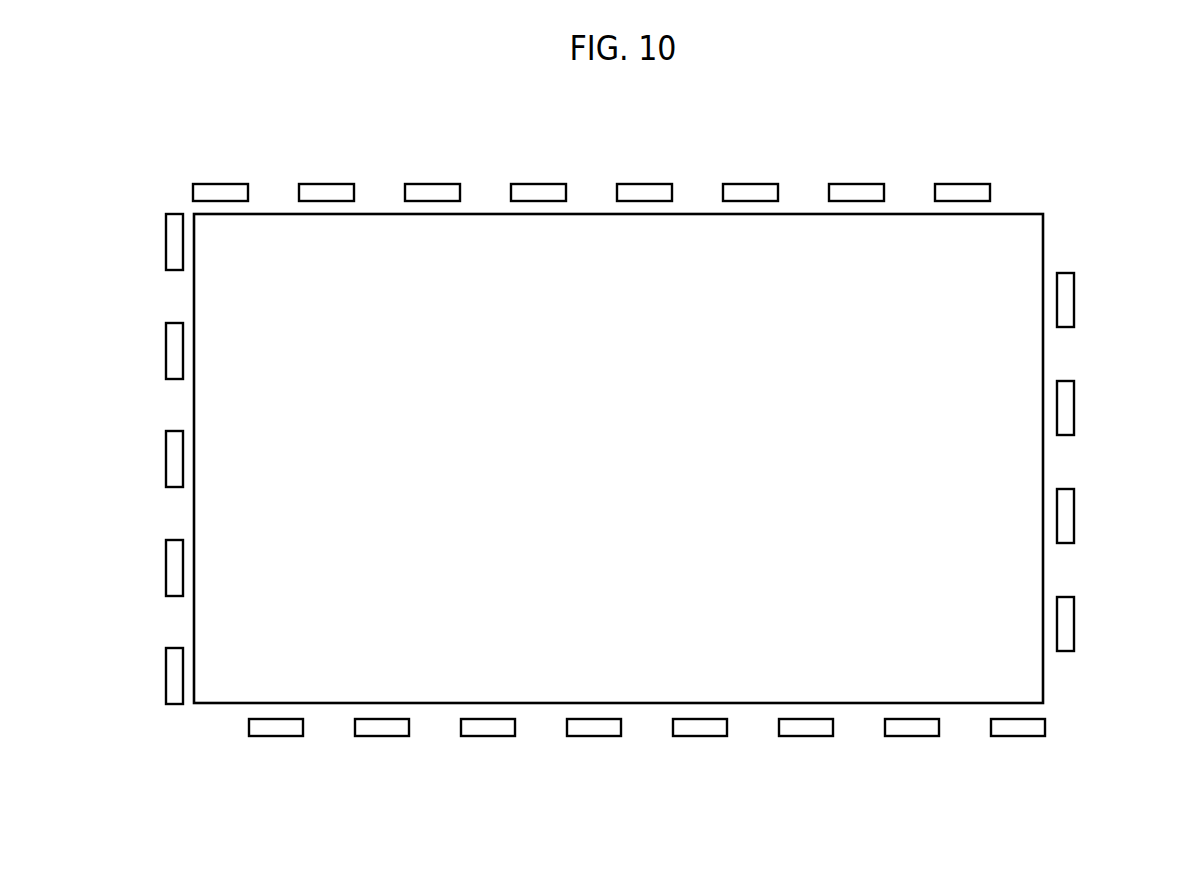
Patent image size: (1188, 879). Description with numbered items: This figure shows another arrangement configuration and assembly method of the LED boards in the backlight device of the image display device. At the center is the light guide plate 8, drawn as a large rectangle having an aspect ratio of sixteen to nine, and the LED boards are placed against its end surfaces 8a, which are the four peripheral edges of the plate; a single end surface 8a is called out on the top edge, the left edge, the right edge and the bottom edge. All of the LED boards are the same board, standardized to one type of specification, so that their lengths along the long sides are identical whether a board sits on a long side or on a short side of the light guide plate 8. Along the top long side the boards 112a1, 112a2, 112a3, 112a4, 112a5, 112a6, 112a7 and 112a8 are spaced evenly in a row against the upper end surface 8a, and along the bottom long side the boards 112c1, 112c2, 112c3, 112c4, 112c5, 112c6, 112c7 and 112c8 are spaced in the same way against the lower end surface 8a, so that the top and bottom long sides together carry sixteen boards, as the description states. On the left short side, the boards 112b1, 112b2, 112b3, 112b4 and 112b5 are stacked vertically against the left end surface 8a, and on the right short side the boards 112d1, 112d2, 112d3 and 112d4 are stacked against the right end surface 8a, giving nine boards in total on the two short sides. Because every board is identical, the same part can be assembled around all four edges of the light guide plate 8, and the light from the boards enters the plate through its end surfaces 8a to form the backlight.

The light guide plate 8 is at (1040, 208).
The end surfaces 8a is at (698, 213).
The upper side sensor electrode 112a1 is at (221, 190).
The upper side sensor electrode 112a2 is at (327, 190).
The upper side sensor electrode 112a3 is at (433, 190).
The upper side sensor electrode 112a4 is at (539, 190).
The upper side sensor electrode 112a5 is at (645, 190).
The upper side sensor electrode 112a6 is at (751, 190).
The upper side sensor electrode 112a7 is at (857, 190).
The upper side sensor electrode 112a8 is at (963, 190).
The left side sensor electrode 112b1 is at (172, 243).
The left side sensor electrode 112b2 is at (172, 352).
The left side sensor electrode 112b3 is at (172, 460).
The left side sensor electrode 112b4 is at (172, 569).
The left side sensor electrode 112b5 is at (172, 677).
The lower side sensor electrode 112c1 is at (275, 728).
The lower side sensor electrode 112c2 is at (381, 728).
The lower side sensor electrode 112c3 is at (487, 728).
The lower side sensor electrode 112c4 is at (593, 728).
The lower side sensor electrode 112c5 is at (699, 728).
The lower side sensor electrode 112c6 is at (805, 728).
The lower side sensor electrode 112c7 is at (911, 728).
The lower side sensor electrode 112c8 is at (1017, 728).
The right side sensor electrode 112d1 is at (1068, 298).
The right side sensor electrode 112d2 is at (1068, 406).
The right side sensor electrode 112d3 is at (1068, 514).
The right side sensor electrode 112d4 is at (1068, 622).